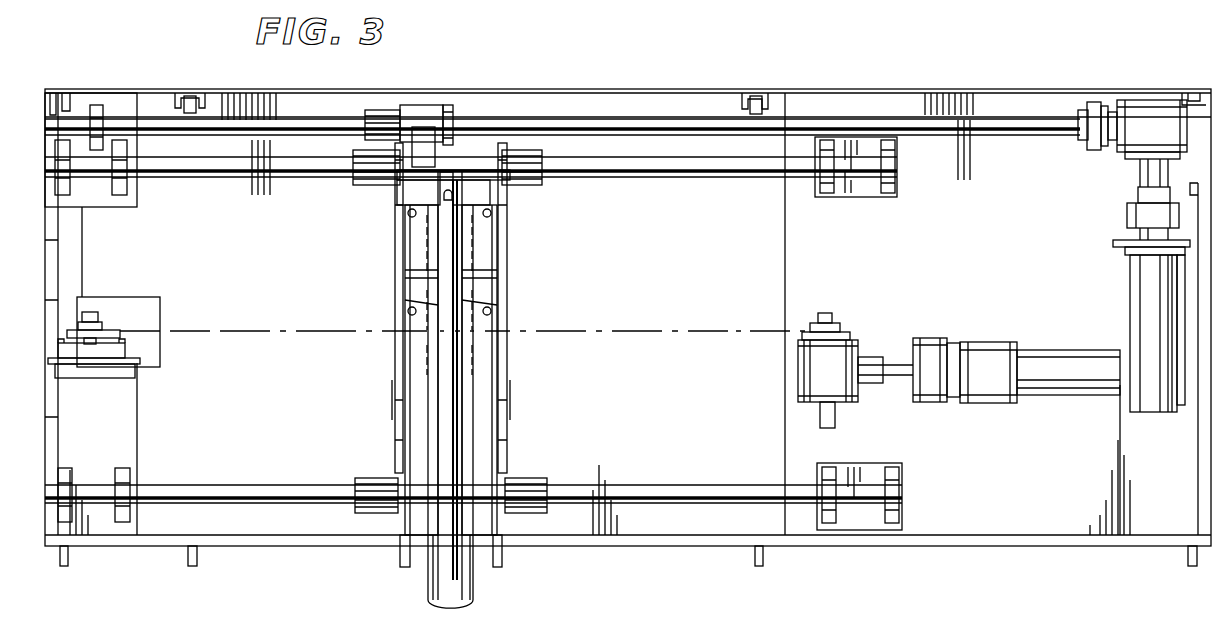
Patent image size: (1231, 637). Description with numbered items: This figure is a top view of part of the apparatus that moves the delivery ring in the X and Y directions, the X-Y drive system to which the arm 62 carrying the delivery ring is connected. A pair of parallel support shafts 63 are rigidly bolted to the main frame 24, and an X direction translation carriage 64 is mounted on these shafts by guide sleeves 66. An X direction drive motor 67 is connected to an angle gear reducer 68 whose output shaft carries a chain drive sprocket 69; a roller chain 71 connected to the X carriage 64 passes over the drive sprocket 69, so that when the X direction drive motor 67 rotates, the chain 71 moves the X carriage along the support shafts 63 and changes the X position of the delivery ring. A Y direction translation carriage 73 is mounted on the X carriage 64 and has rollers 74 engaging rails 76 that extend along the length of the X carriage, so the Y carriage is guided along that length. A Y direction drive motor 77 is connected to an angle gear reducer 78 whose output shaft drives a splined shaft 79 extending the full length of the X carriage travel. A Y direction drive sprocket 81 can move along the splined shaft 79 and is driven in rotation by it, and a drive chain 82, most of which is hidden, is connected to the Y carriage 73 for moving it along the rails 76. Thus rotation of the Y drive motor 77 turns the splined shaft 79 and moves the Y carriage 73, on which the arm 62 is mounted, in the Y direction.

The main frame 24 is at (873, 546).
The arm 62 is at (425, 591).
The support shafts 63 is at (693, 178).
The X direction translation carriage 64 is at (512, 378).
The guide sleeves 66 is at (370, 186).
The X direction drive motor 67 is at (1009, 322).
The angle gear reducer 68 is at (808, 377).
The chain drive sprocket 69 is at (850, 330).
The roller chain 71 is at (644, 313).
The Y direction translation carriage 73 is at (485, 264).
The rollers 74 is at (408, 216).
The rails 76 is at (495, 443).
The Y direction drive motor 77 is at (1132, 290).
The angle gear reducer 78 is at (1157, 102).
The splined shaft 79 is at (1002, 120).
The Y direction drive sprocket 81 is at (448, 112).
The drive chain 82 is at (458, 188).